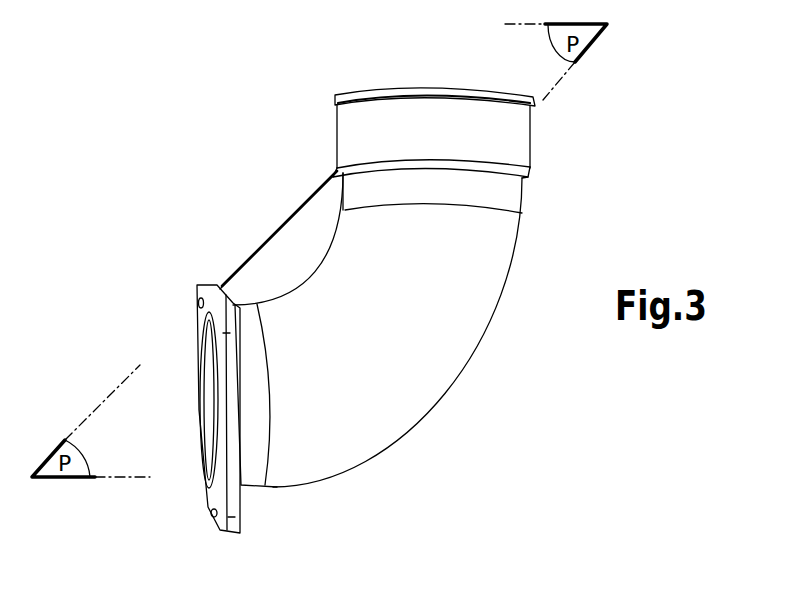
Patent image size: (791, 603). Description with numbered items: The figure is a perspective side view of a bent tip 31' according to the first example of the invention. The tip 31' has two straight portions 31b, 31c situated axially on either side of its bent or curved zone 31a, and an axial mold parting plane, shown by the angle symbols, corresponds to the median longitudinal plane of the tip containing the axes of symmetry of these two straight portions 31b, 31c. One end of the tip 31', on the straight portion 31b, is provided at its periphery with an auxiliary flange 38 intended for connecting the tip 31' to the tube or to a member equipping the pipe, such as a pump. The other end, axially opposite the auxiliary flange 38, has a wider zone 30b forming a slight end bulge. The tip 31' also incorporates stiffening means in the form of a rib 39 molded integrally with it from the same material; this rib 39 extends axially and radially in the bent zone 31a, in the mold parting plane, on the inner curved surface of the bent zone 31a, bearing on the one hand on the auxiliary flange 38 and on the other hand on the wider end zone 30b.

The wider zone 30b is at (533, 148).
The straight portion 31c is at (525, 232).
The bent zone 31a is at (451, 392).
The straight portion 31b is at (277, 487).
The tip 31' is at (417, 318).
The rib 39 is at (285, 242).
The auxiliary flange 38 is at (210, 517).